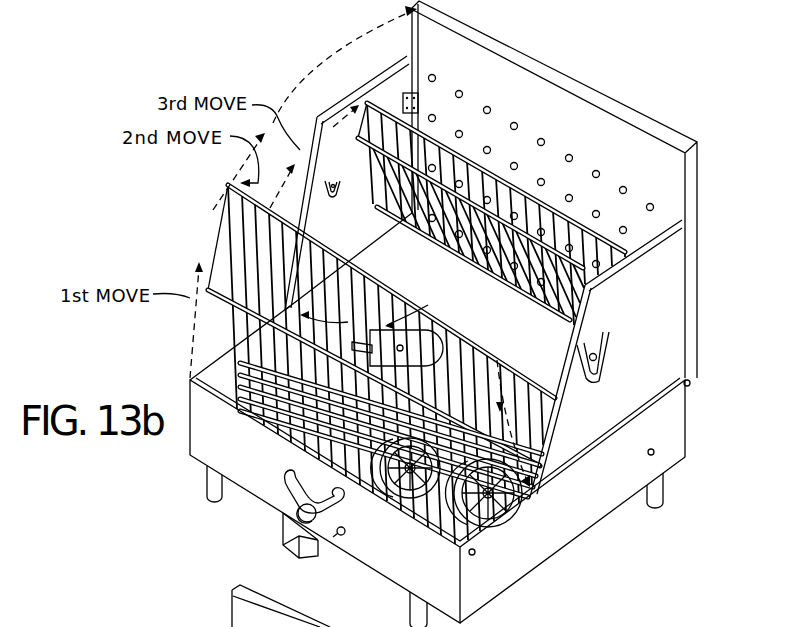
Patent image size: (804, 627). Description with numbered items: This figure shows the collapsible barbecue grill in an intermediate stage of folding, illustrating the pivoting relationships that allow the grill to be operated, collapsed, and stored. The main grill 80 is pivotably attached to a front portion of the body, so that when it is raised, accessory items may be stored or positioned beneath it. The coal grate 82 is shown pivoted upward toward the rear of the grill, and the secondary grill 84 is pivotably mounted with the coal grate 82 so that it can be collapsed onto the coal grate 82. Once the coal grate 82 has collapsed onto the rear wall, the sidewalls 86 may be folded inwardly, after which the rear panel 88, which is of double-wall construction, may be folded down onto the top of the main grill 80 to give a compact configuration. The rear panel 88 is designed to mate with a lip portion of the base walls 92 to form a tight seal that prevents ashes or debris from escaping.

The main grill 80 is at (226, 250).
The coal grate 82 is at (461, 152).
The secondary grill 84 is at (353, 132).
The sidewalls 86 is at (355, 168).
The rear panel 88 is at (607, 161).
The base walls 92 is at (250, 465).